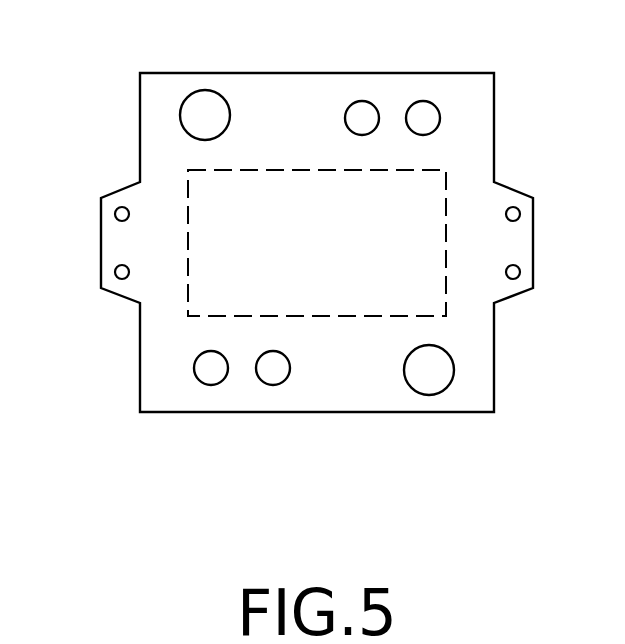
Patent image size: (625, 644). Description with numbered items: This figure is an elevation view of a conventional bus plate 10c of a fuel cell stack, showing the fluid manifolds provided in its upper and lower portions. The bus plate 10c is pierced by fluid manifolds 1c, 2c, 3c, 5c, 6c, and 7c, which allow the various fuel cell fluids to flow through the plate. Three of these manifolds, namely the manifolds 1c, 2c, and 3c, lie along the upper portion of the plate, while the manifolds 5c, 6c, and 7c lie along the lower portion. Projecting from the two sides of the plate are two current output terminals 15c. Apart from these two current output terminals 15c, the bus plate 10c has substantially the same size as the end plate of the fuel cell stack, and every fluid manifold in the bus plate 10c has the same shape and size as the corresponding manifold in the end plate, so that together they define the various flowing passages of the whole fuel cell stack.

The bus plate 10c is at (486, 362).
The current output terminals 15c is at (122, 290).
The fluid manifold 1c is at (212, 90).
The fluid manifold 2c is at (363, 102).
The fluid manifold 3c is at (425, 102).
The fluid manifold 5c is at (413, 392).
The fluid manifold 6c is at (263, 383).
The fluid manifold 7c is at (200, 383).